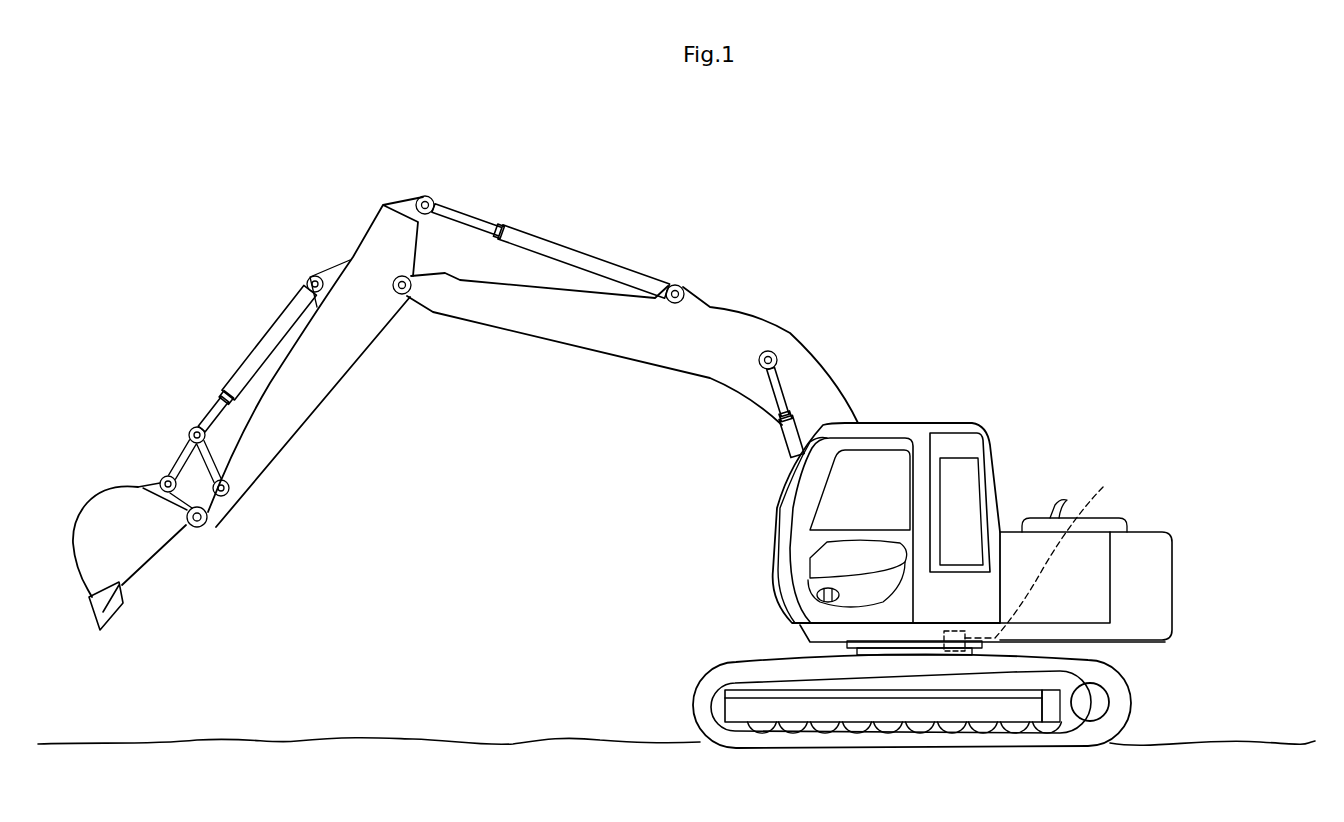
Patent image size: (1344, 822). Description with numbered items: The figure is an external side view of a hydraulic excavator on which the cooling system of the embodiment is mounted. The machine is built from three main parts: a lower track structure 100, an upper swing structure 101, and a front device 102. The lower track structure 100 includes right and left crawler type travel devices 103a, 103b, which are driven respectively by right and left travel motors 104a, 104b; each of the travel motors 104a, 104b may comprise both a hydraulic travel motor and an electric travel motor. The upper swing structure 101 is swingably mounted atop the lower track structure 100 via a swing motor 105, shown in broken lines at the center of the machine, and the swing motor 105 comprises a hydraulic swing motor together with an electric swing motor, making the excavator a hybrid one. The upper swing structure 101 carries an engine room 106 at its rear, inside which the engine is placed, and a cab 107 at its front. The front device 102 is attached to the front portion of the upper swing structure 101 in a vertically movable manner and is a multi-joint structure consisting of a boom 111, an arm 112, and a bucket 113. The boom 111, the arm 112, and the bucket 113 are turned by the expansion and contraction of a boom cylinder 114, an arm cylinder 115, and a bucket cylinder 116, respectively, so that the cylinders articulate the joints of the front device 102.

The lower track structure 100 is at (907, 724).
The upper swing structure 101 is at (1018, 505).
The front device 102 is at (773, 297).
The crawler type travel device 103a is at (813, 697).
The crawler type travel device 103b is at (700, 686).
The travel motor 104a is at (1195, 697).
The travel motor 104b is at (1098, 699).
The swing motor 105 is at (1052, 557).
The engine room 106 is at (1087, 592).
The cab 107 is at (903, 425).
The boom 111 is at (550, 323).
The arm 112 is at (298, 402).
The bucket 113 is at (147, 567).
The boom cylinder 114 is at (787, 444).
The arm cylinder 115 is at (583, 257).
The bucket cylinder 116 is at (257, 345).